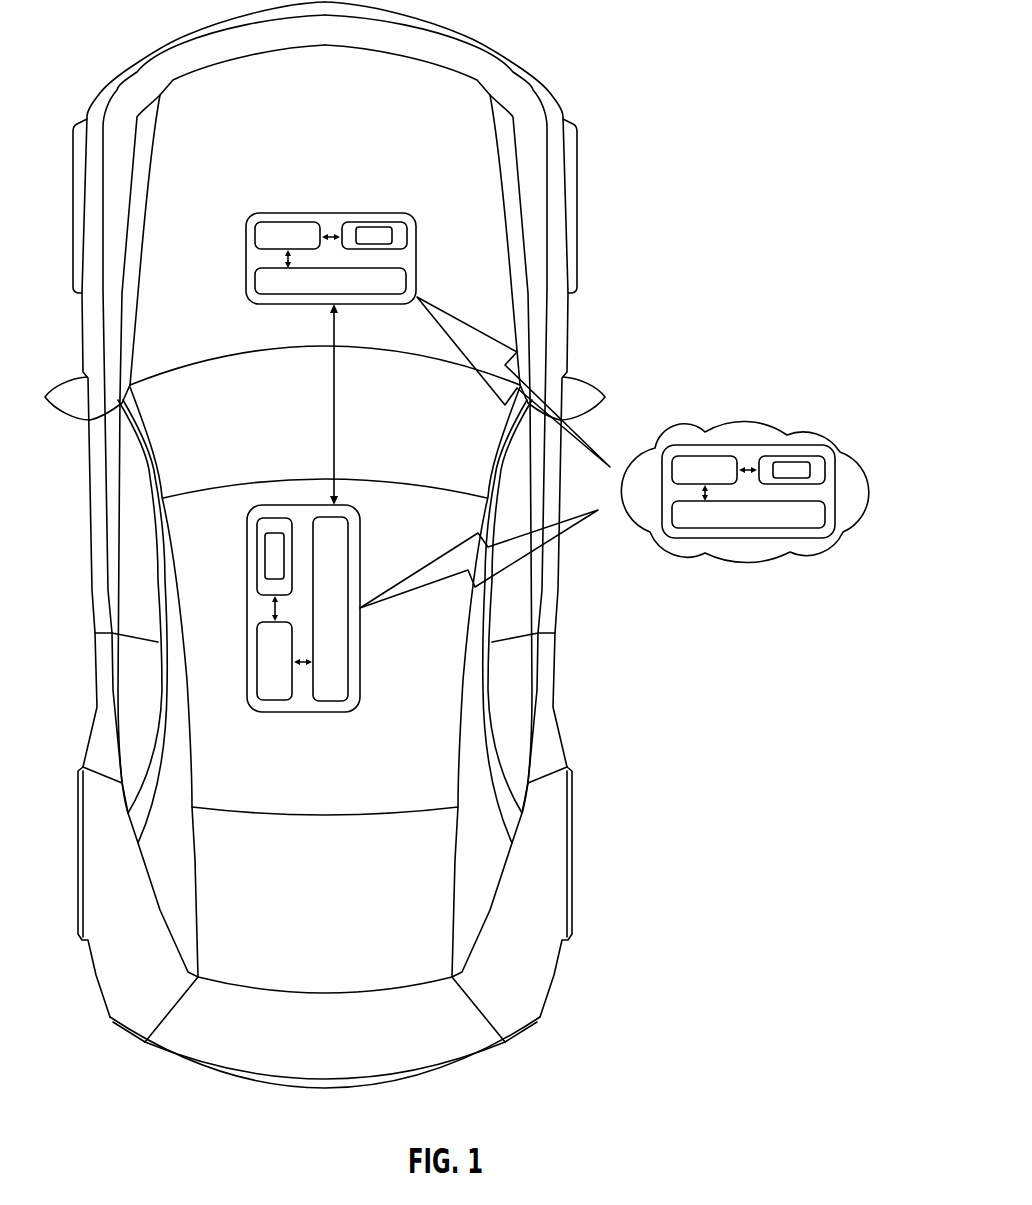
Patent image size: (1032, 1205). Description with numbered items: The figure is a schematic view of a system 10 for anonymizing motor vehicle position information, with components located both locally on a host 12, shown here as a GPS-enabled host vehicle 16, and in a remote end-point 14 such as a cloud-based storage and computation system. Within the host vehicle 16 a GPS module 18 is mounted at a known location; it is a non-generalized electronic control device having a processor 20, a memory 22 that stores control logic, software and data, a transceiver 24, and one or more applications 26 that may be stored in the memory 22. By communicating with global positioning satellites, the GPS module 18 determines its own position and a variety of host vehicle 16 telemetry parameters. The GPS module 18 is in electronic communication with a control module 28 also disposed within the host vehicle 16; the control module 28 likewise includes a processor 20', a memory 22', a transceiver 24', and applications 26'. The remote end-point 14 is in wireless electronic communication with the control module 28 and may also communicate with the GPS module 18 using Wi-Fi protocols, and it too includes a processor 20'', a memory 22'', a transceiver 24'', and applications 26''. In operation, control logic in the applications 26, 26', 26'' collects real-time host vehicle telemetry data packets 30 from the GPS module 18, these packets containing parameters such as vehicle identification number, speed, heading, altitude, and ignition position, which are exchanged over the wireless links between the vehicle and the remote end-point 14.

The system for anonymizing motor vehicle position information 10 is at (632, 88).
The host 12 is at (387, 545).
The host vehicle 16 is at (607, 298).
The remote end-point 14 is at (832, 436).
The GPS module 18 is at (330, 213).
The processor 20 is at (275, 217).
The memory 22 is at (407, 217).
The transceiver 24 is at (367, 272).
The application 26 is at (414, 222).
The control module 28 is at (360, 540).
The processor 20' is at (241, 661).
The memory 22' is at (237, 549).
The transceiver 24' is at (373, 609).
The application 26' is at (237, 561).
The processor 20'' is at (703, 436).
The memory 22'' is at (830, 448).
The transceiver 24'' is at (748, 552).
The application 26'' is at (838, 485).
The real-time host vehicle telemetry data packets 30 is at (530, 378).